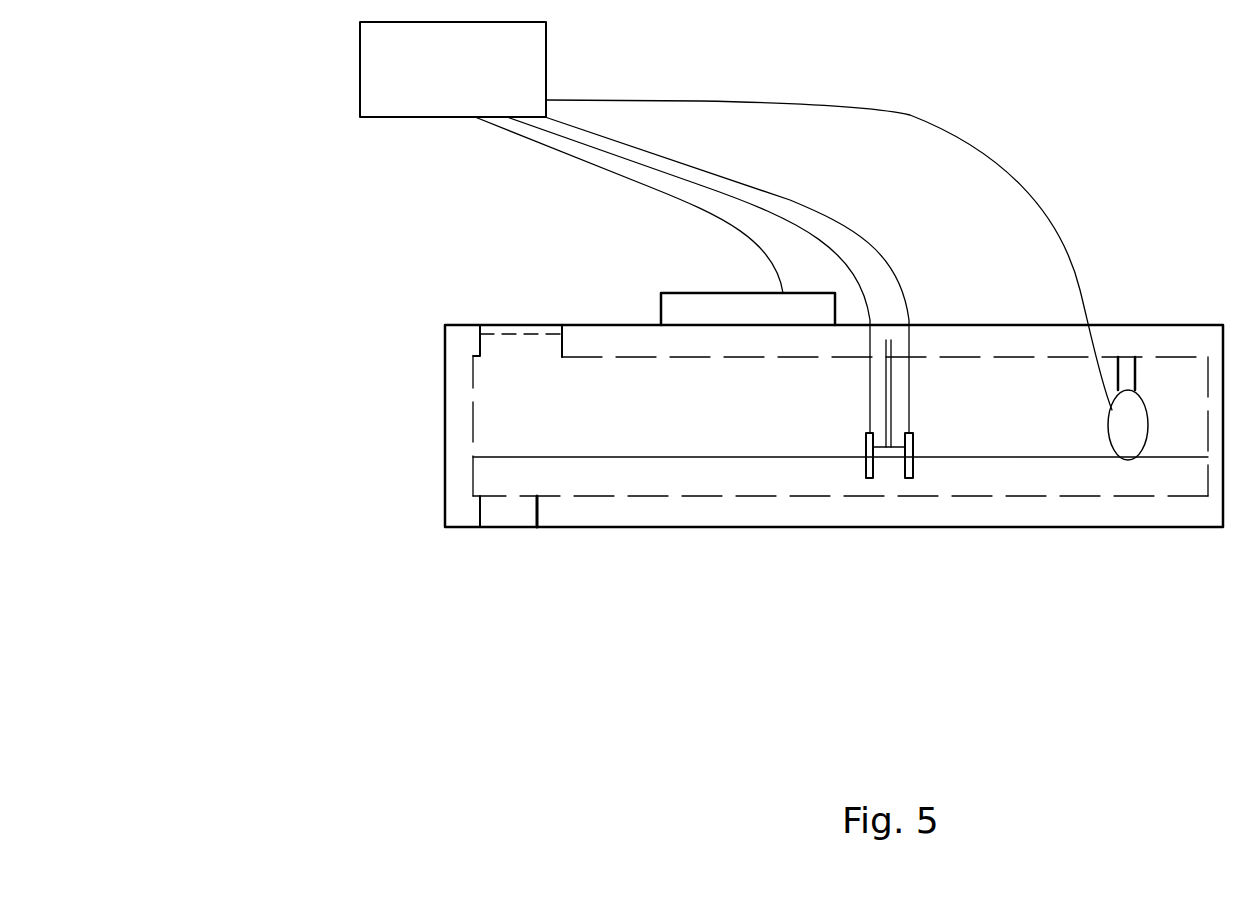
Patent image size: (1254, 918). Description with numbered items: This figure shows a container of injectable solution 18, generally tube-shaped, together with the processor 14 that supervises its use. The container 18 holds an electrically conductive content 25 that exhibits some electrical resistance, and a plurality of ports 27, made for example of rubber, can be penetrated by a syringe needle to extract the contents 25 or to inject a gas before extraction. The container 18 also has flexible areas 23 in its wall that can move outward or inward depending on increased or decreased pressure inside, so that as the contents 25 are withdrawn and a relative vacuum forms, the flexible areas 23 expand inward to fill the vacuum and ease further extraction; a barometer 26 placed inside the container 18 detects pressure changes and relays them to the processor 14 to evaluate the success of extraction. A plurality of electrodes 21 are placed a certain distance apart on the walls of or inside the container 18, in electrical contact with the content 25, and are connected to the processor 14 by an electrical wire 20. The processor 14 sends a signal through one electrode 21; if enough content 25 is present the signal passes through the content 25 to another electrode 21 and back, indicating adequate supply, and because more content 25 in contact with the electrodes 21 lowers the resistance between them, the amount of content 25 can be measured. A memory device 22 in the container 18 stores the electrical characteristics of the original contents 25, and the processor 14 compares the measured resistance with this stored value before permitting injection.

The processor 14 is at (373, 84).
The container of injectable solution 18 is at (842, 508).
The electrical wire 20 is at (662, 186).
The electrodes 21 is at (966, 272).
The memory device 22 is at (733, 293).
The flexible areas 23 is at (522, 333).
The contents 25 is at (1032, 470).
The sensor element 26 is at (1135, 425).
The ports 27 is at (495, 520).